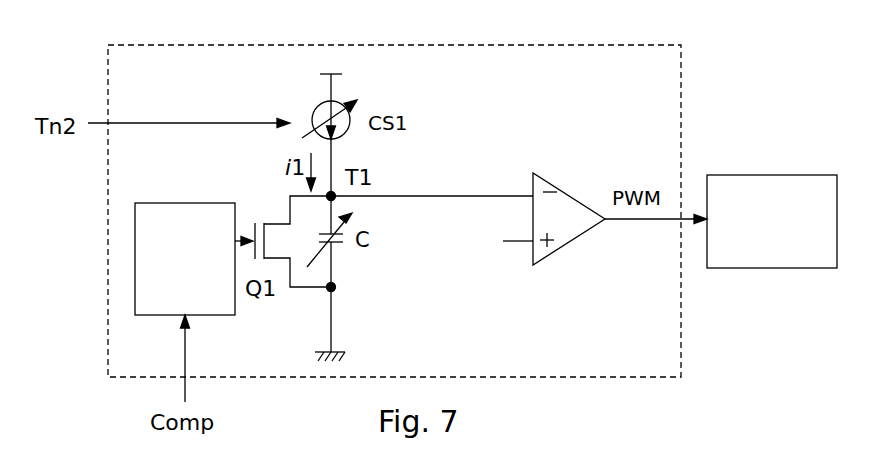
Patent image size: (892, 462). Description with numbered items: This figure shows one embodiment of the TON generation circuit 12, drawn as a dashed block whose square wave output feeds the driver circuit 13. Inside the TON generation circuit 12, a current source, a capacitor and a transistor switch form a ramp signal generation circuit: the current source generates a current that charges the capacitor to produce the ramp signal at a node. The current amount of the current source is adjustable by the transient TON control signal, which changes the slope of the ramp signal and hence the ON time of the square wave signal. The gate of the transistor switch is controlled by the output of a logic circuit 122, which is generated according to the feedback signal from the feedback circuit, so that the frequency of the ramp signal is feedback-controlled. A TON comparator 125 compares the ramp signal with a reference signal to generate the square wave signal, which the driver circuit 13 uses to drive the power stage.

The TON generation circuit 12 is at (653, 362).
The driver circuit 13 is at (760, 266).
The logic circuit 122 is at (168, 296).
The TON comparator 125 is at (575, 240).